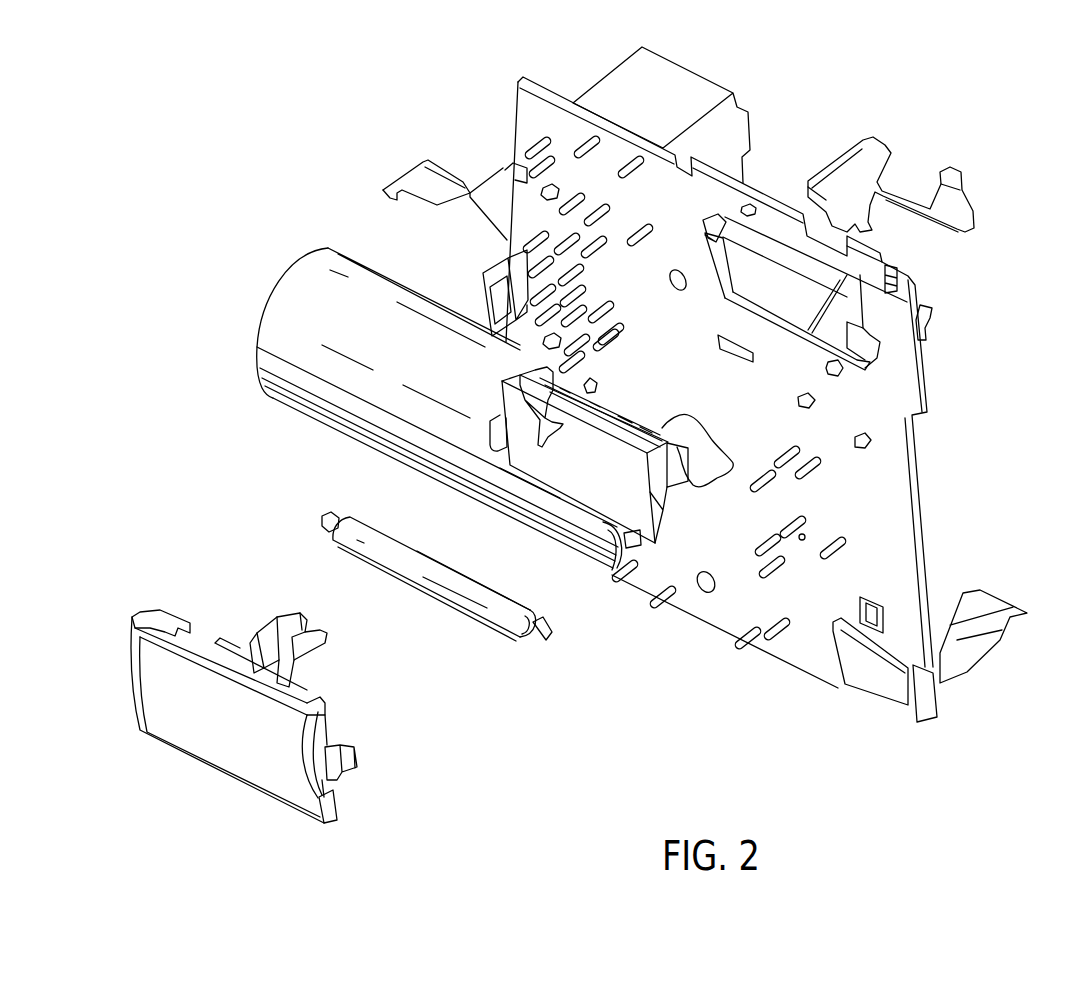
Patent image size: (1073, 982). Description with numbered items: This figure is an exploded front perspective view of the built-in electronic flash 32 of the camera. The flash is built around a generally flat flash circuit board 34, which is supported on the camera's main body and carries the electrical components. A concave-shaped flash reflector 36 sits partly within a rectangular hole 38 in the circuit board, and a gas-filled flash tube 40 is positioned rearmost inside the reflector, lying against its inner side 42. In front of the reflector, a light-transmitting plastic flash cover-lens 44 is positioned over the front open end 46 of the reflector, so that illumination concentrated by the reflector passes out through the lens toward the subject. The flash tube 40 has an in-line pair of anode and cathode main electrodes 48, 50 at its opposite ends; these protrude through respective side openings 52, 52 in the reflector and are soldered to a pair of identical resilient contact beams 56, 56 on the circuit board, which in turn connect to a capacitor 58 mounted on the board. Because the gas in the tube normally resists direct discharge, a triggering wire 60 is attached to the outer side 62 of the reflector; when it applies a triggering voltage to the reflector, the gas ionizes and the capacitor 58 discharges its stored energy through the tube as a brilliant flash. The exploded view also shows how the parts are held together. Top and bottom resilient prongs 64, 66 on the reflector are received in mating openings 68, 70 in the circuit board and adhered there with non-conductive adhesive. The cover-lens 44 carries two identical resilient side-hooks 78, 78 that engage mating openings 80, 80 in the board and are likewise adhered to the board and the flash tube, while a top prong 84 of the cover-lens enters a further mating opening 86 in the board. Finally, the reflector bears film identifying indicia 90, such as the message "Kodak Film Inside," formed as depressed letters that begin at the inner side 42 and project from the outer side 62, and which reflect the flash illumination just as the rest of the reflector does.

The built-in electronic flash 32 is at (389, 157).
The flash circuit board 34 is at (929, 507).
The flash reflector 36 is at (548, 488).
The rectangular hole 38 is at (782, 307).
The flash tube 40 is at (465, 618).
The inner side 42 is at (608, 490).
The flash cover-lens 44 is at (338, 817).
The front open end 46 is at (597, 503).
The anode main electrode 48 is at (323, 518).
The cathode main electrode 50 is at (552, 636).
The side openings 52 is at (560, 423).
The resilient contact beams 56 is at (935, 320).
The capacitor 58 is at (270, 326).
The triggering wire 60 is at (830, 305).
The outer side 62 is at (620, 412).
The top resilient prong 64 is at (532, 372).
The bottom resilient prong 66 is at (630, 545).
The mating opening 68 is at (750, 208).
The mating opening 70 is at (840, 378).
The resilient side-hooks 78 is at (357, 760).
The mating openings 80 is at (722, 222).
The top prong 84 is at (288, 610).
The mating opening 86 is at (870, 152).
The film identifying indicia 90 is at (590, 385).